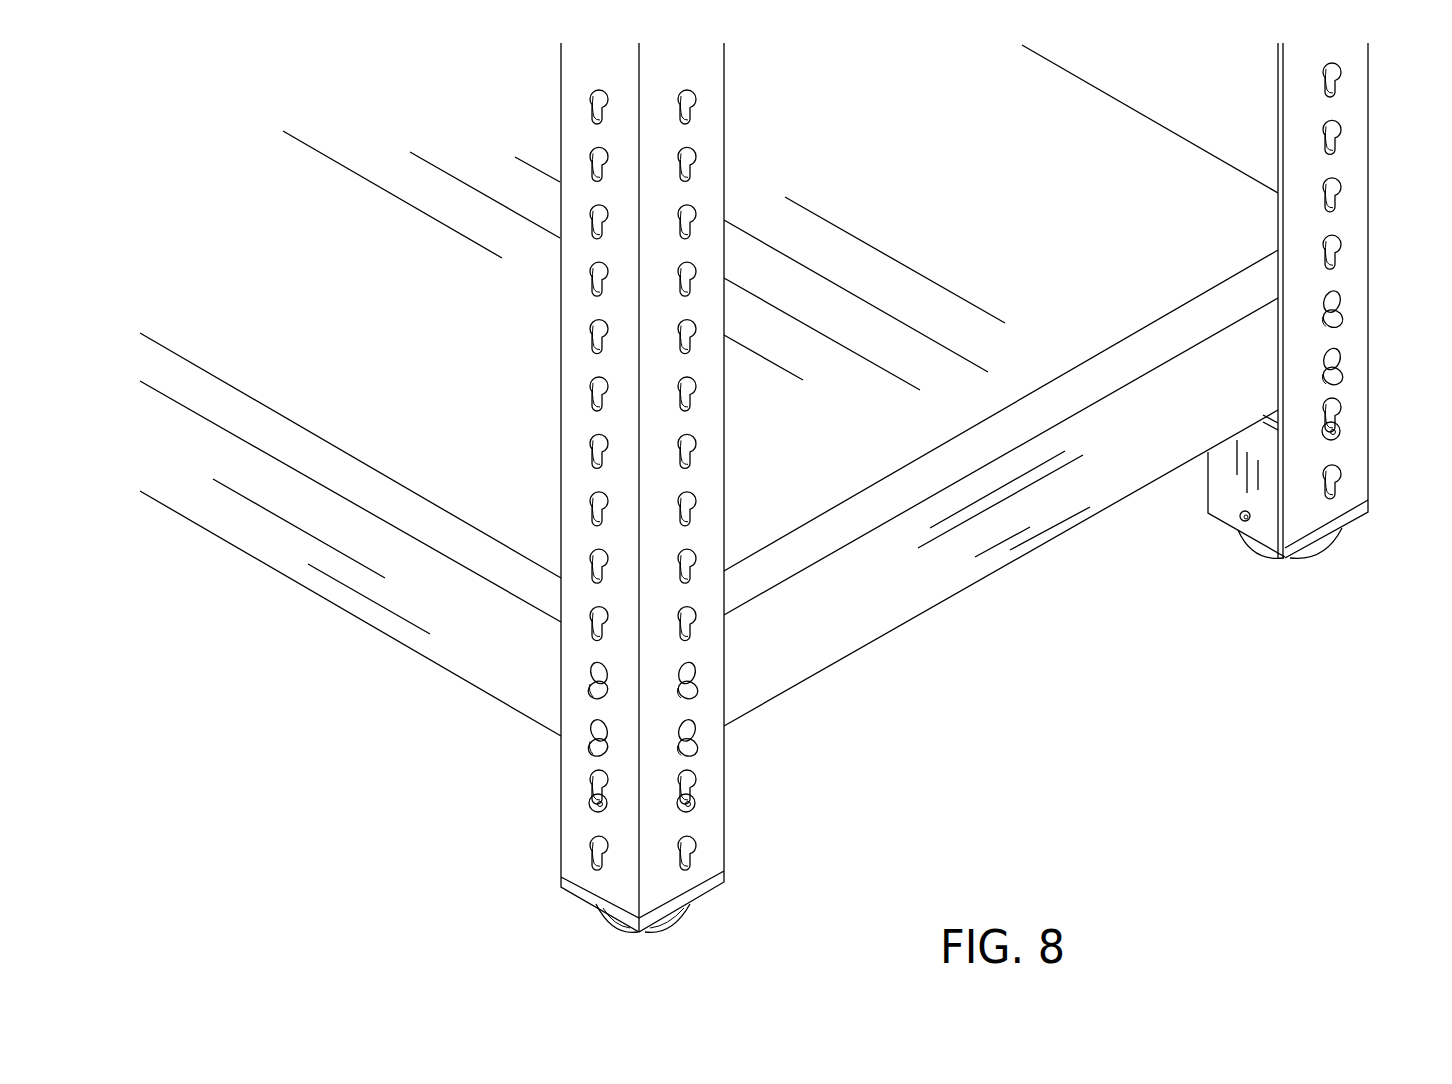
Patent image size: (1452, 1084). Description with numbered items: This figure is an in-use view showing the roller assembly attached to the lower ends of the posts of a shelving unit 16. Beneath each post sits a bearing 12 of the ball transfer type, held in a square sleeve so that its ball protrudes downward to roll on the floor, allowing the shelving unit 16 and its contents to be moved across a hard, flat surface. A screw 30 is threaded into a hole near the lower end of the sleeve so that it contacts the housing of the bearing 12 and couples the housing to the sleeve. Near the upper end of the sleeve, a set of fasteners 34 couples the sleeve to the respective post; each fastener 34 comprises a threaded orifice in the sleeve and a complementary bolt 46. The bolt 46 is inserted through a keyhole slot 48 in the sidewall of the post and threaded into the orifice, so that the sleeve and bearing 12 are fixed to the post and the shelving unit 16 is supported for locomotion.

The bearing 12 is at (692, 905).
The shelving unit 16 is at (1298, 355).
The screw 30 is at (1241, 522).
The fastener 34 is at (683, 808).
The bolt 46 is at (1347, 429).
The keyhole slot 48 is at (594, 783).